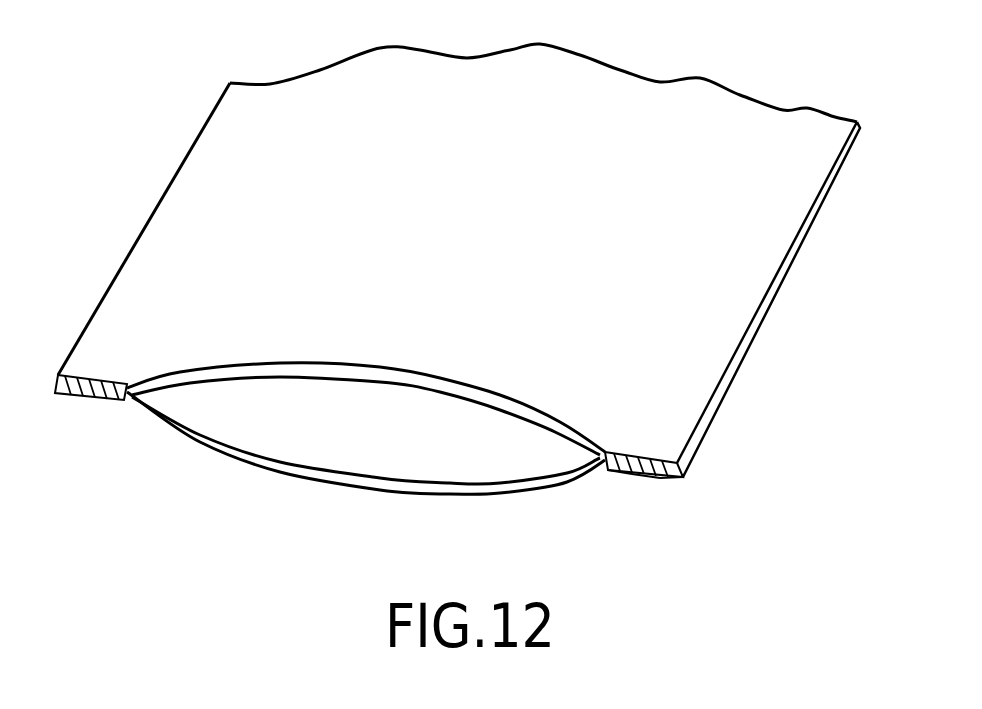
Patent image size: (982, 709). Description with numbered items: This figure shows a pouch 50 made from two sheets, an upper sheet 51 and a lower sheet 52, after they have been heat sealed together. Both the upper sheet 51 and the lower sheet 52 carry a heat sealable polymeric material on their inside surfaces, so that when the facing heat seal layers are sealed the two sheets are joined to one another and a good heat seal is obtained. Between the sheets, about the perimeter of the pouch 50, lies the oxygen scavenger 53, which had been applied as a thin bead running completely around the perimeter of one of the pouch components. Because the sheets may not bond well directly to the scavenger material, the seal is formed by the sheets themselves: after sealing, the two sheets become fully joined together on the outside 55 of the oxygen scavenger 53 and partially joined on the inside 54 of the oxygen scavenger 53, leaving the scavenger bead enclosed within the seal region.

The pouch 50 is at (295, 362).
The upper sheet 51 is at (715, 333).
The lower sheet 52 is at (480, 493).
The oxygen scavenger 53 is at (637, 472).
The inside 54 is at (618, 472).
The outside 55 is at (683, 476).